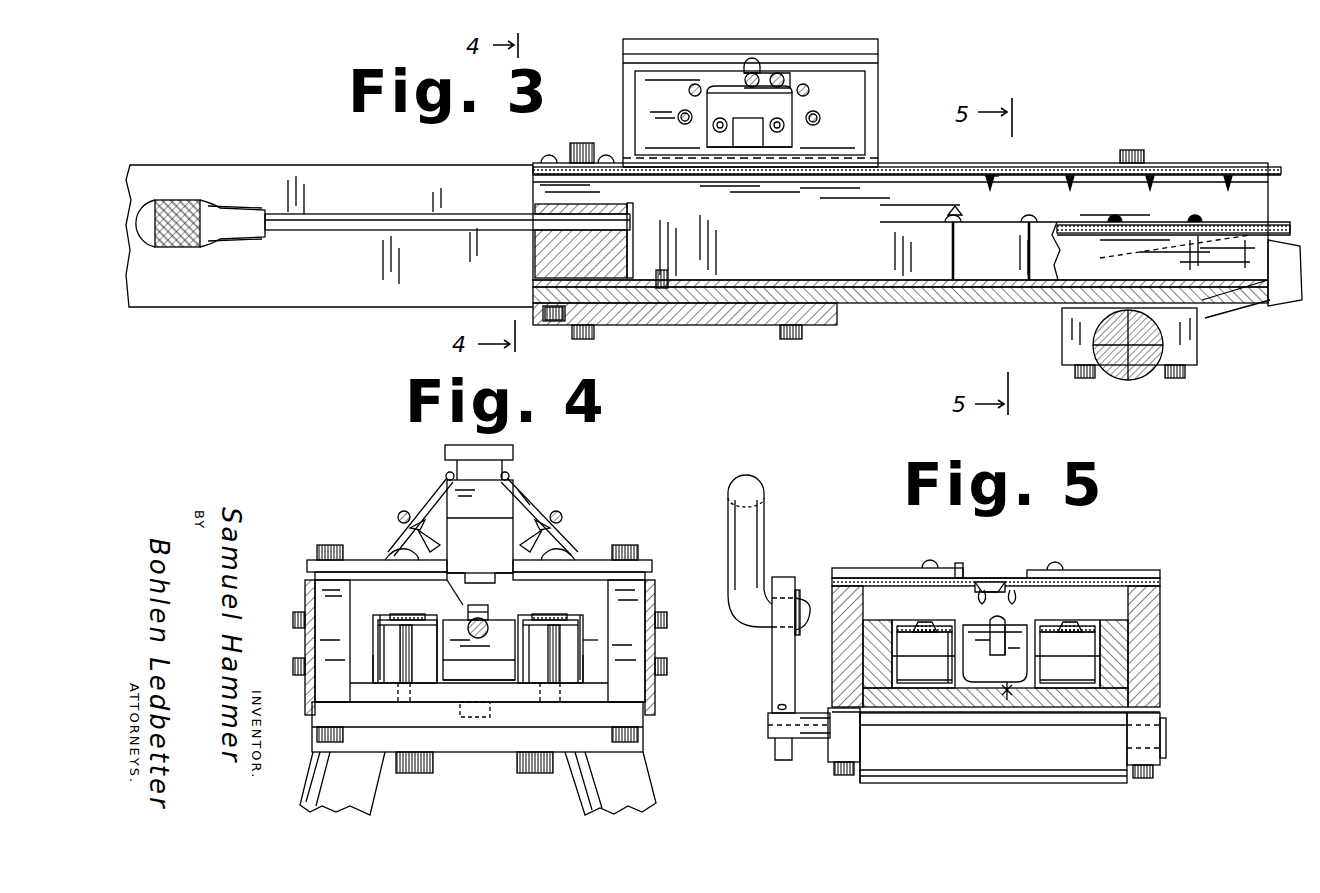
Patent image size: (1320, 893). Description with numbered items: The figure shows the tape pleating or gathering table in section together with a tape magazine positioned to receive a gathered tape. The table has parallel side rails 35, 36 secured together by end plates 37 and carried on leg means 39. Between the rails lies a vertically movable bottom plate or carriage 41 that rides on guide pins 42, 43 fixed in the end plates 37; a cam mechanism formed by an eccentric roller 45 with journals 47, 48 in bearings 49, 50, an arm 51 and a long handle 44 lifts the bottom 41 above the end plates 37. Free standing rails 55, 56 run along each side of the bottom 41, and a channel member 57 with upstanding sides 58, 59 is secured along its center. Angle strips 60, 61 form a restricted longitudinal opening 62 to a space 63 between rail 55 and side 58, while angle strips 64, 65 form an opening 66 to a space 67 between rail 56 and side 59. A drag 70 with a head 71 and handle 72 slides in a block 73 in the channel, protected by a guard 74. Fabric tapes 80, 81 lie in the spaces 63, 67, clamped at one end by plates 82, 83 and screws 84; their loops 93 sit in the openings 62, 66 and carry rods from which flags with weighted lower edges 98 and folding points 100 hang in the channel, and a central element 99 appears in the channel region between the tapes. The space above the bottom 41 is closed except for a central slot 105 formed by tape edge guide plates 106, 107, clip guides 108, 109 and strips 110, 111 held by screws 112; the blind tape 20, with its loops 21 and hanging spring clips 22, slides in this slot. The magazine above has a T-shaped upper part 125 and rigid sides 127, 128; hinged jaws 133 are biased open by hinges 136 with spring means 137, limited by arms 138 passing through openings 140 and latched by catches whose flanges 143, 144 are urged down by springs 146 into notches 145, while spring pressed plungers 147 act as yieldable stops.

In FIG. 3, the tape 20 is at (1035, 170).
In FIG. 5, the tape 20 is at (1003, 576).
In FIG. 3, the tubular loops or casings 21 is at (996, 182).
In FIG. 5, the tubular loops or casings 21 is at (1008, 600).
In FIG. 3, the spring clip 22 is at (990, 186).
In FIG. 5, the spring clip 22 is at (978, 596).
In FIG. 3, the side rail 35 is at (905, 190).
In FIG. 4, the side rail 35 is at (320, 588).
In FIG. 5, the side rail 35 is at (835, 650).
In FIG. 4, the side rail 36 is at (640, 592).
In FIG. 5, the side rail 36 is at (1160, 640).
In FIG. 3, the end plate 37 is at (825, 312).
In FIG. 4, the end plate 37 is at (440, 722).
In FIG. 4, the leg means 39 is at (605, 790).
In FIG. 3, the bottom plate or carriage 41 is at (940, 292).
In FIG. 4, the bottom plate or carriage 41 is at (528, 696).
In FIG. 5, the bottom plate or carriage 41 is at (930, 700).
In FIG. 4, the vertical guide pin 42 is at (410, 662).
In FIG. 4, the vertical guide pin 43 is at (555, 662).
In FIG. 5, the handle or bar 44 is at (748, 482).
In FIG. 3, the eccentric roller 45 is at (1115, 372).
In FIG. 5, the eccentric roller 45 is at (1020, 772).
In FIG. 5, the journal 47 is at (818, 740).
In FIG. 5, the journal 48 is at (1166, 728).
In FIG. 3, the bearing 49 is at (1195, 356).
In FIG. 5, the bearing 49 is at (842, 778).
In FIG. 5, the bearing 50 is at (1150, 758).
In FIG. 3, the arm 51 is at (1286, 298).
In FIG. 5, the arm 51 is at (782, 680).
In FIG. 4, the free standing rail 55 is at (352, 670).
In FIG. 5, the free standing rail 55 is at (892, 616).
In FIG. 4, the free standing rail 56 is at (600, 670).
In FIG. 5, the free standing rail 56 is at (1128, 620).
In FIG. 4, the channel member 57 is at (470, 682).
In FIG. 5, the channel member 57 is at (1015, 710).
In FIG. 4, the channel side 58 is at (479, 650).
In FIG. 5, the channel side 58 is at (960, 668).
In FIG. 4, the channel side 59 is at (513, 662).
In FIG. 5, the channel side 59 is at (1030, 668).
In FIG. 4, the angle strip 60 is at (405, 649).
In FIG. 5, the angle strip 60 is at (890, 660).
In FIG. 4, the angle strip 61 is at (416, 654).
In FIG. 5, the angle strip 61 is at (939, 657).
In FIG. 4, the restricted longitudinal opening 62 is at (396, 616).
In FIG. 4, the space 63 is at (388, 696).
In FIG. 5, the space 63 is at (924, 679).
In FIG. 4, the angle strip 64 is at (550, 649).
In FIG. 5, the angle strip 64 is at (1067, 654).
In FIG. 4, the angle strip 65 is at (564, 654).
In FIG. 5, the angle strip 65 is at (1135, 658).
In FIG. 4, the restricted longitudinal opening 66 is at (540, 616).
In FIG. 4, the space 67 is at (578, 696).
In FIG. 5, the space 67 is at (1067, 679).
In FIG. 3, the drag 70 is at (472, 214).
In FIG. 4, the drag 70 is at (486, 624).
In FIG. 3, the head 71 is at (632, 240).
In FIG. 4, the head 71 is at (462, 606).
In FIG. 3, the handle 72 is at (220, 206).
In FIG. 3, the block 73 is at (540, 256).
In FIG. 3, the guard 74 is at (355, 176).
In FIG. 3, the fabric tape 80 is at (1276, 228).
In FIG. 5, the fabric tape 80 is at (924, 657).
In FIG. 5, the fabric tape 81 is at (1067, 657).
In FIG. 4, the plate 82 is at (385, 612).
In FIG. 4, the plate 83 is at (590, 645).
In FIG. 4, the screw 84 is at (410, 620).
In FIG. 3, the tubular loops or casings 93 is at (1115, 224).
In FIG. 5, the tubular loops or casings 93 is at (1000, 616).
In FIG. 3, the weighted lower edge 98 is at (958, 240).
In FIG. 5, the weighted lower edge 98 is at (1012, 632).
In FIG. 5, the block 99 is at (995, 653).
In FIG. 3, the folding point 100 is at (952, 212).
In FIG. 5, the folding point 100 is at (998, 618).
In FIG. 4, the slot 105 is at (494, 552).
In FIG. 3, the tape edge guide plate 106 is at (960, 172).
In FIG. 4, the tape edge guide plate 106 is at (598, 560).
In FIG. 5, the tape edge guide plate 106 is at (888, 568).
In FIG. 4, the tape edge guide plate 107 is at (370, 560).
In FIG. 5, the tape edge guide plate 107 is at (1145, 570).
In FIG. 5, the clip guide 108 is at (920, 609).
In FIG. 5, the clip guide 109 is at (1069, 609).
In FIG. 4, the strip 110 is at (476, 602).
In FIG. 5, the strip 110 is at (962, 563).
In FIG. 4, the strip 111 is at (492, 598).
In FIG. 5, the strip 111 is at (1068, 575).
In FIG. 5, the screw 112 is at (930, 560).
In FIG. 3, the upper part of the body portion 125 is at (865, 43).
In FIG. 4, the upper part of the body portion 125 is at (445, 452).
In FIG. 3, the rigid side 127 is at (870, 118).
In FIG. 4, the rigid side 127 is at (480, 526).
In FIG. 4, the rigid side 128 is at (520, 538).
In FIG. 3, the side piece or jaw 133 is at (867, 96).
In FIG. 4, the side piece or jaw 133 is at (522, 492).
In FIG. 4, the hinge 136 is at (446, 474).
In FIG. 3, the spring means 137 is at (745, 80).
In FIG. 3, the arm 138 is at (735, 138).
In FIG. 4, the arm 138 is at (556, 528).
In FIG. 3, the opening 140 is at (765, 118).
In FIG. 3, the upper outwardly turned flange 143 is at (808, 94).
In FIG. 4, the upper outwardly turned flange 143 is at (412, 506).
In FIG. 3, the lower outwardly turned flange 144 is at (780, 146).
In FIG. 4, the lower outwardly turned flange 144 is at (404, 558).
In FIG. 4, the notch or keeper 145 is at (480, 531).
In FIG. 3, the spring 146 is at (790, 84).
In FIG. 3, the spring pressed plunger 147 is at (680, 112).
In FIG. 4, the spring pressed plunger 147 is at (400, 512).